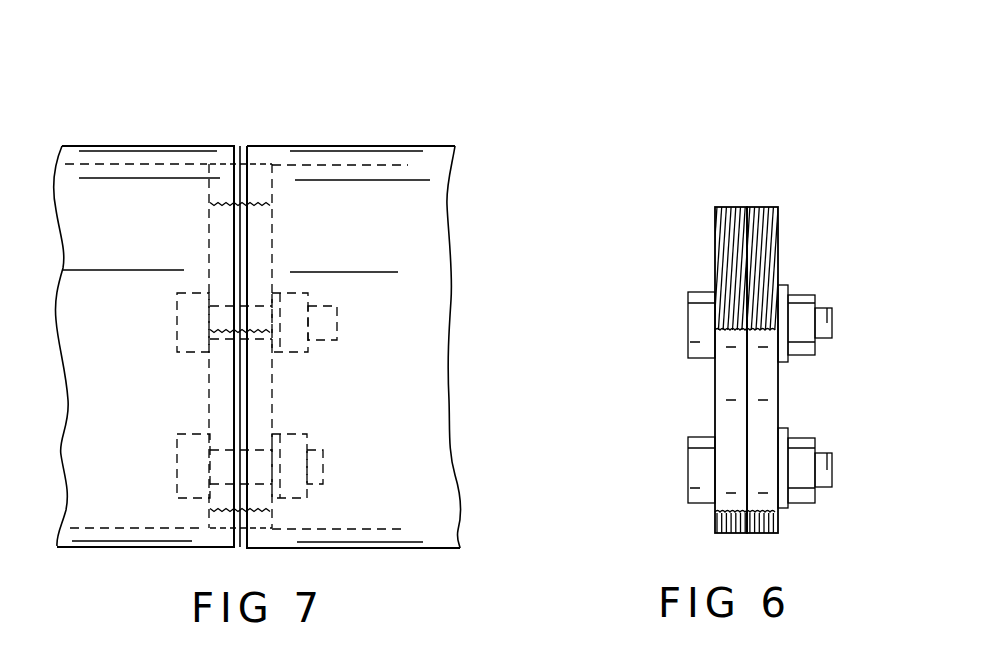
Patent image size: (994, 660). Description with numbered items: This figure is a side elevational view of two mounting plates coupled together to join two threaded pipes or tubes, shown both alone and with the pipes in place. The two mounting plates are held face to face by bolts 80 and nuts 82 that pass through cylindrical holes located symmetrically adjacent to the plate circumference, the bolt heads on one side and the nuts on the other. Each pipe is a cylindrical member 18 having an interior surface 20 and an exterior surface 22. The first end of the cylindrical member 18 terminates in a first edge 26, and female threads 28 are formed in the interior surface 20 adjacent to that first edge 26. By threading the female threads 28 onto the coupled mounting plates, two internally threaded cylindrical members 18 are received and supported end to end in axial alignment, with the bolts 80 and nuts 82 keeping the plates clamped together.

In FIG. 7, the cylindrical member 18 is at (153, 147).
In FIG. 7, the interior surface 20 is at (418, 170).
In FIG. 7, the exterior surface 22 is at (317, 148).
In FIG. 7, the first edge 26 is at (237, 146).
In FIG. 7, the female threads 28 is at (258, 160).
In FIG. 6, the bolts 80 is at (688, 459).
In FIG. 6, the nuts 82 is at (803, 357).